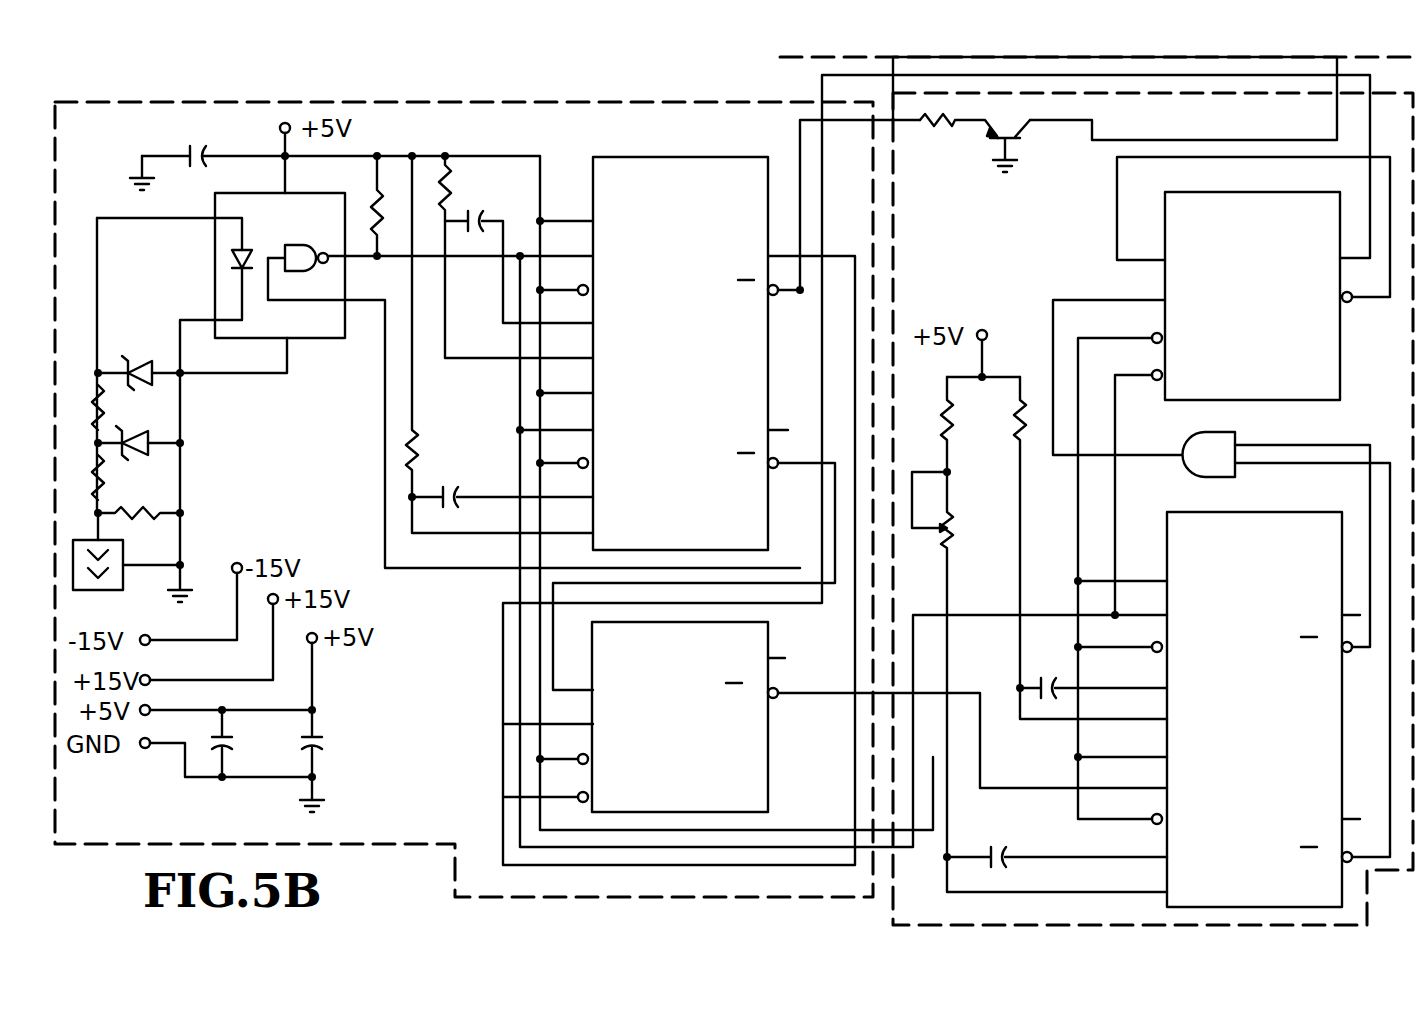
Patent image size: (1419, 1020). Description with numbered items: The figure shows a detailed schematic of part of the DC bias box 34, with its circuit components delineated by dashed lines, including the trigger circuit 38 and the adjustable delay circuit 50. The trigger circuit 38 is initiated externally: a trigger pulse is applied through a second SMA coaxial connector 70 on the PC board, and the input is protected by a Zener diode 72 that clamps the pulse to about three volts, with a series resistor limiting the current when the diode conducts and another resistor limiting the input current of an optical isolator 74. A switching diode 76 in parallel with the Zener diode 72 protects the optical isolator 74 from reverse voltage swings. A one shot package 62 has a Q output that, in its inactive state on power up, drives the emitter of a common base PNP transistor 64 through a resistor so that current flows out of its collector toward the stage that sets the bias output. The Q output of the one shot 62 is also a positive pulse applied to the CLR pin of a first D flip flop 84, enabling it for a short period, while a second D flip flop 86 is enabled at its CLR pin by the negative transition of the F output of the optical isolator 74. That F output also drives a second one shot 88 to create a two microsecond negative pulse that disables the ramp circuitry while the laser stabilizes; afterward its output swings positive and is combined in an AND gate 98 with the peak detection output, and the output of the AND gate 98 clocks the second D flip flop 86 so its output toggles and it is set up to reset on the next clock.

The DC bias box 34 is at (1088, 252).
The trigger circuit 38 is at (596, 146).
The adjustable delay circuit 50 is at (1246, 138).
The one shot package 62 is at (700, 157).
The common base PNP transistor 64 is at (976, 138).
The second SMA coaxial connector 70 is at (125, 558).
The Zener diode 72 is at (148, 435).
The optical isolator 74 is at (322, 342).
The switching diode 76 is at (136, 360).
The first D-Flip Flop 84 is at (768, 765).
The second D-Flip Flop 86 is at (1340, 345).
The second one shot 88 is at (1175, 512).
The AND gate 98 is at (1222, 432).